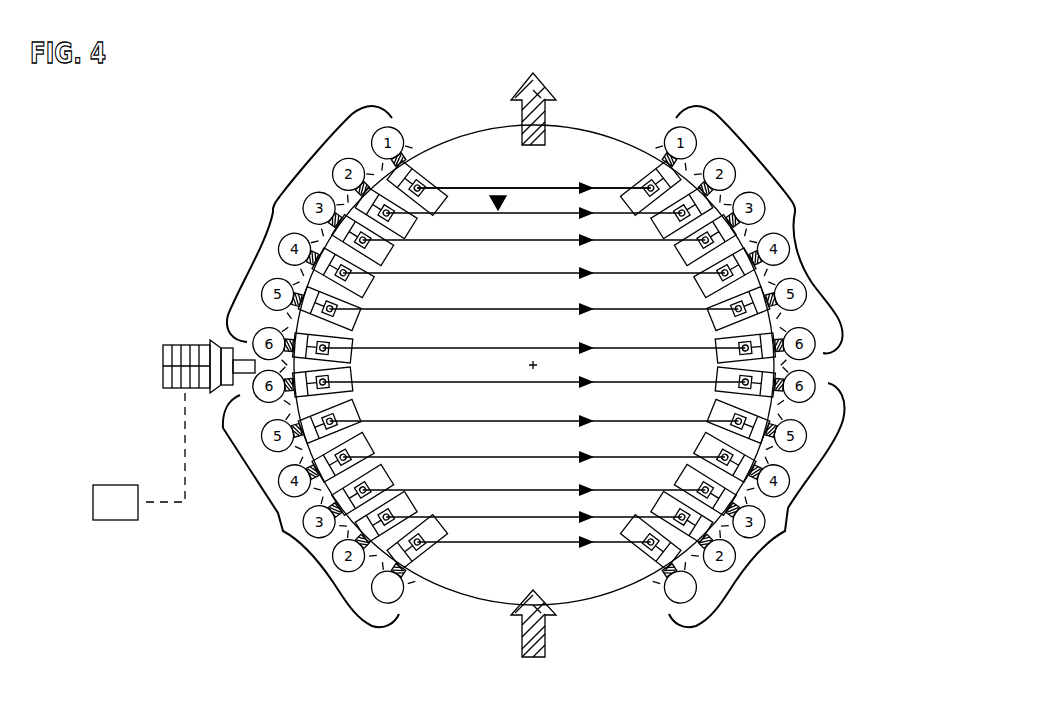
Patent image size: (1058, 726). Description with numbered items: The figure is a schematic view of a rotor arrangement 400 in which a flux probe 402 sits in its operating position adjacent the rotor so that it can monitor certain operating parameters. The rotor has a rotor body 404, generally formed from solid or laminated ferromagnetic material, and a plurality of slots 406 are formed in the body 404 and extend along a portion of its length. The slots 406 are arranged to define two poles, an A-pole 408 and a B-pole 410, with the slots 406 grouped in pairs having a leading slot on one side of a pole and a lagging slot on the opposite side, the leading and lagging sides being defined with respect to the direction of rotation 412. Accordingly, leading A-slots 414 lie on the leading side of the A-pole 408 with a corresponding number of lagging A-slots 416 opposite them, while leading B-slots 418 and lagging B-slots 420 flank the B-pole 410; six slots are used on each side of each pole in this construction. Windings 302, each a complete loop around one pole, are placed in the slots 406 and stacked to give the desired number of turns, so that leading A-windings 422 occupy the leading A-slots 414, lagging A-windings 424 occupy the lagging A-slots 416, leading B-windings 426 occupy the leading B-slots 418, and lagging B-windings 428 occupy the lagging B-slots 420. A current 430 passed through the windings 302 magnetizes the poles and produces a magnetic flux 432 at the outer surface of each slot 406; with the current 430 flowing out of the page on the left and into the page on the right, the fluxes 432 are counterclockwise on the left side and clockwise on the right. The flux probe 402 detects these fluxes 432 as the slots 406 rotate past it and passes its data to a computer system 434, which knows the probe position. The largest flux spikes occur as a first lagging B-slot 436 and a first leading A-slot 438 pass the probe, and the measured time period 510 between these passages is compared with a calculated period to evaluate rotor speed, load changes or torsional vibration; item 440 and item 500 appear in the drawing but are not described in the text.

The rotor arrangement 400 is at (790, 78).
The flux probe 402 is at (163, 370).
The rotor body 404 is at (622, 140).
The slots 406 is at (432, 552).
The A-pole 408 is at (520, 97).
The B-pole 410 is at (545, 642).
The direction of rotation 412 is at (880, 255).
The leading A-slots 414 is at (274, 207).
The lagging A-slots 416 is at (776, 201).
The leading B-slots 418 is at (786, 510).
The lagging B-slots 420 is at (283, 531).
The leading A-windings 422 is at (287, 190).
The lagging A-windings 424 is at (795, 208).
The leading B-windings 426 is at (786, 531).
The lagging B-windings 428 is at (282, 531).
The current 430 is at (613, 192).
The magnetic flux 432 is at (410, 602).
The computer system 434 is at (115, 522).
The first lagging B-slot 436 is at (430, 575).
The first leading A-slot 438 is at (438, 180).
The sensor connector 440 is at (792, 392).
The windings 302 is at (645, 555).
The measured time period 510 is at (328, 716).
The sensing system 500 is at (892, 720).